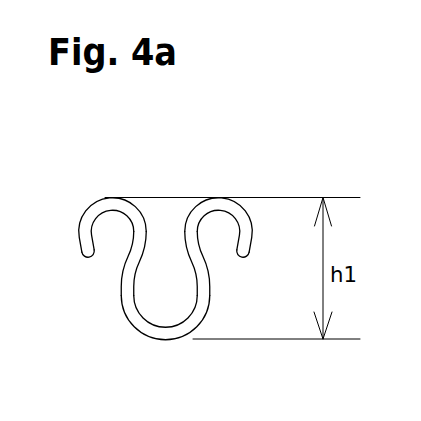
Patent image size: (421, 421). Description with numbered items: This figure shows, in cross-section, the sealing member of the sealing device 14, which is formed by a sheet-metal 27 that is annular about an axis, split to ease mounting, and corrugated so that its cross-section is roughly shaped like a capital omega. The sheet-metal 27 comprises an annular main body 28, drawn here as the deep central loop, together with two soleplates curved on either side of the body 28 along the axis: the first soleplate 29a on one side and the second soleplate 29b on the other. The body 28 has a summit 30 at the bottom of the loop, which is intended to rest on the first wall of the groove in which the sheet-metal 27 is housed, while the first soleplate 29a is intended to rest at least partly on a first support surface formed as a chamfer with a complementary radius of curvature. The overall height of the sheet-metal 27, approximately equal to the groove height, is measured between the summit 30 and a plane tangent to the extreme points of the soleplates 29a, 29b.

The sealing device 14 is at (154, 267).
The sheet-metal 27 is at (132, 268).
The annular main body 28 is at (146, 321).
The first soleplate 29a is at (252, 237).
The second soleplate 29b is at (93, 221).
The summit 30 is at (166, 340).